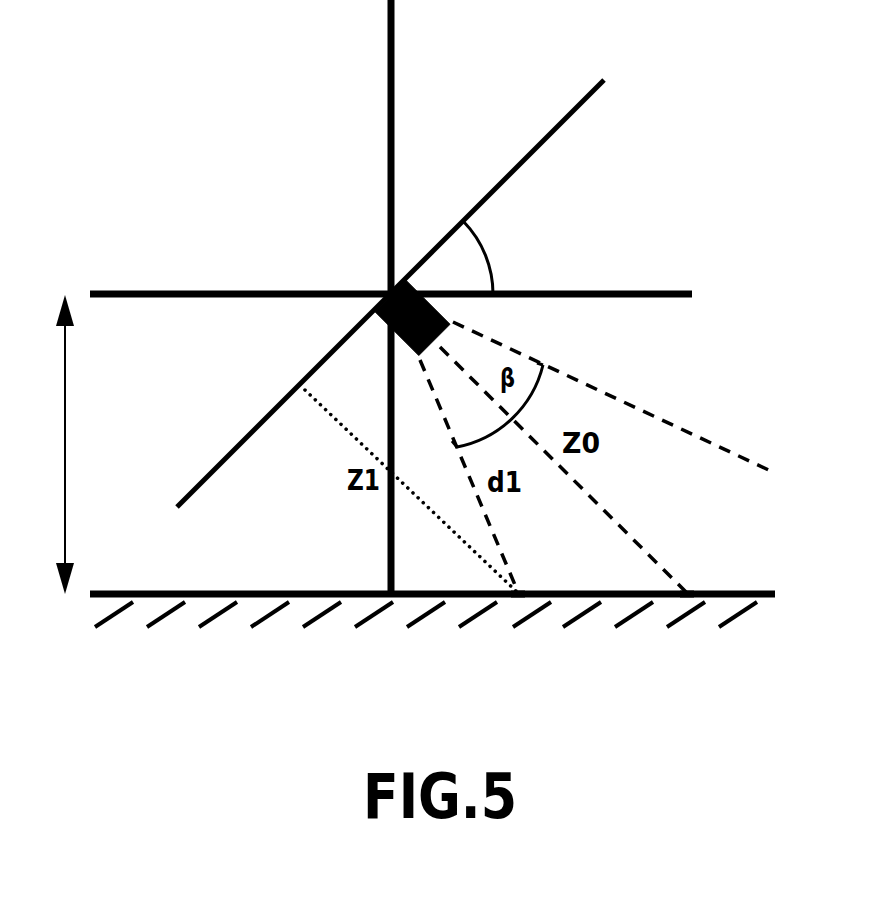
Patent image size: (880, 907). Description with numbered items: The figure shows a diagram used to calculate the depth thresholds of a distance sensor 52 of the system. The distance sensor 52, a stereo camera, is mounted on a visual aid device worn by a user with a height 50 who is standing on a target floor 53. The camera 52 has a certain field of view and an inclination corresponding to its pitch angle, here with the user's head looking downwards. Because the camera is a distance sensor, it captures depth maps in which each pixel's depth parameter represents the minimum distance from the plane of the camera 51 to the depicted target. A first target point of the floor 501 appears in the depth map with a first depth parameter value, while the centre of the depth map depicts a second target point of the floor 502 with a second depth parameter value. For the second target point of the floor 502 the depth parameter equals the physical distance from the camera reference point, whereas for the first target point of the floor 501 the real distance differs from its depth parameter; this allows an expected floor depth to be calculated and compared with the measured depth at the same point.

The height 50 is at (46, 444).
The plane of the camera 51 is at (579, 76).
The distance sensor 52 is at (411, 252).
The target floor 53 is at (758, 568).
The first target point of the floor 501 is at (518, 630).
The second target point of the floor 502 is at (687, 630).